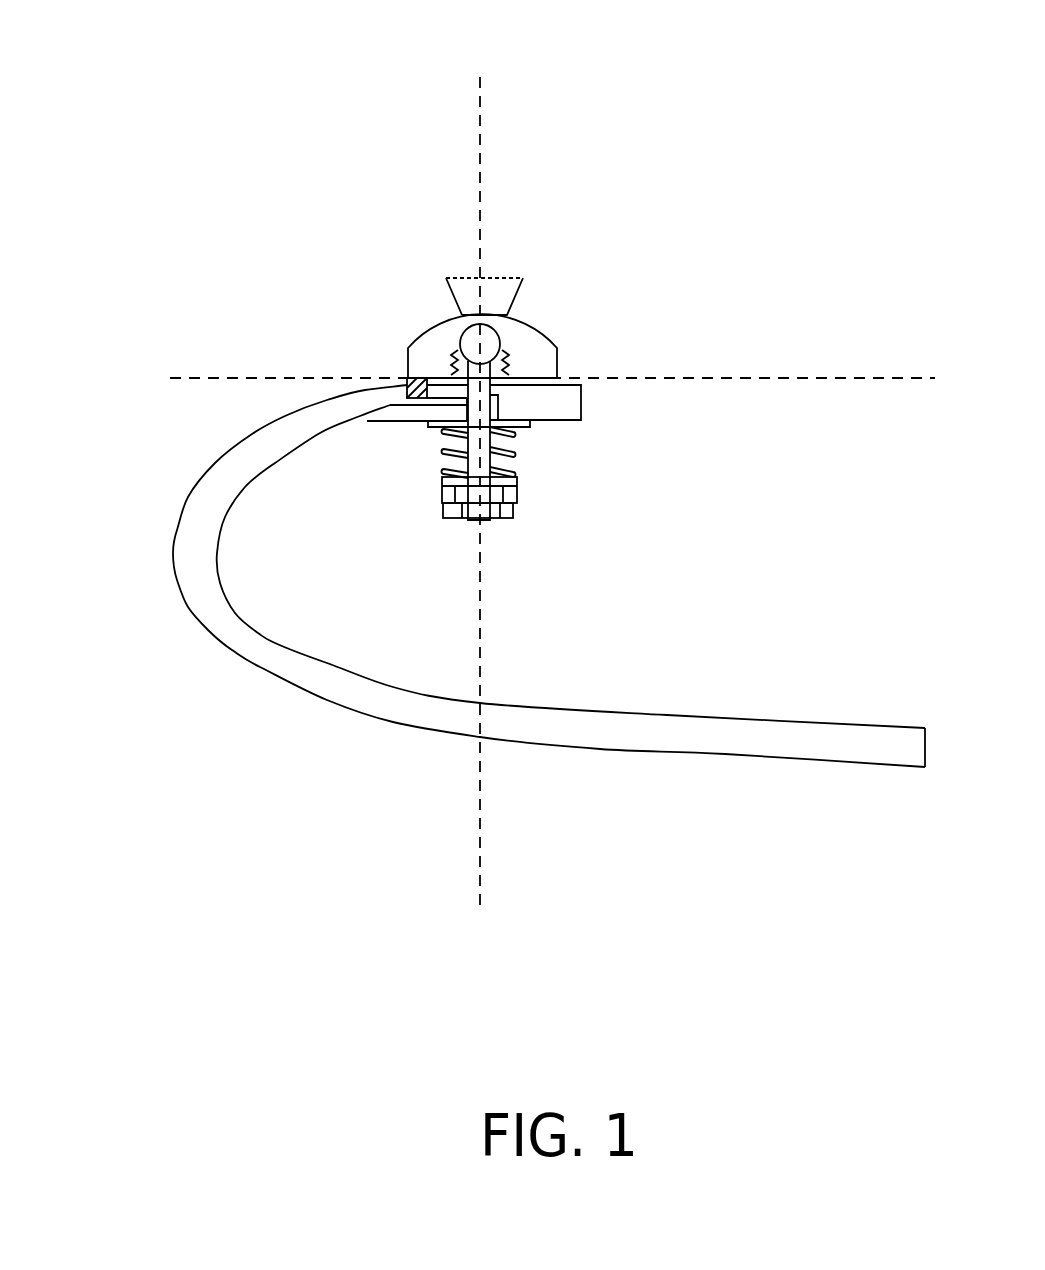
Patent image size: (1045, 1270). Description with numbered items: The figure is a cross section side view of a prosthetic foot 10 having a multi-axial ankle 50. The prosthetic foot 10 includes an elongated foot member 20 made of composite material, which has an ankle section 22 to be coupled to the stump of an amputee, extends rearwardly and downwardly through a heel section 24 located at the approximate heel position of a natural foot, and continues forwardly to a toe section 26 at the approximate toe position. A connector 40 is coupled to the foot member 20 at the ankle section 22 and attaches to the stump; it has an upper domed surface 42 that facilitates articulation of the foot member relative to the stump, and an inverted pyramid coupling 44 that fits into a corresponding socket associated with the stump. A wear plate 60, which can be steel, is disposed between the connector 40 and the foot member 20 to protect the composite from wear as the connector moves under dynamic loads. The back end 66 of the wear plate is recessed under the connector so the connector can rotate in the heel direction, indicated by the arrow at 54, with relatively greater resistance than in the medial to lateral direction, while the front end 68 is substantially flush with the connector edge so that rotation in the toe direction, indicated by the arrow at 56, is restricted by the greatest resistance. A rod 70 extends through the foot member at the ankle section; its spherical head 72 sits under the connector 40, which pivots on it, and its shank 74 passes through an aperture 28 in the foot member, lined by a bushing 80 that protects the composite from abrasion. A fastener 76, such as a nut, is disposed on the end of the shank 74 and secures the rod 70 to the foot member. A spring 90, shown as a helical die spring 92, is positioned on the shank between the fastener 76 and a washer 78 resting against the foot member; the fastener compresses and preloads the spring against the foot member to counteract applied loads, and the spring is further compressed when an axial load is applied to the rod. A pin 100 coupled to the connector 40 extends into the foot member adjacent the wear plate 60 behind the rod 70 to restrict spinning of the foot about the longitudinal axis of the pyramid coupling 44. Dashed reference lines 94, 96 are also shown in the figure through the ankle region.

The prosthetic foot 10 is at (307, 128).
The elongated foot member 20 is at (472, 627).
The ankle section 22 is at (582, 397).
The heel section 24 is at (190, 512).
The toe section 26 is at (725, 754).
The aperture 28 is at (367, 421).
The connector 40 is at (476, 349).
The upper domed surface 42 is at (530, 323).
The inverted pyramid coupling 44 is at (493, 283).
The ankle 50 is at (572, 359).
The heel direction arrow 54 is at (509, 294).
The toe direction arrow 56 is at (538, 300).
The wear plate 60 is at (523, 385).
The back end of the wear plate 66 is at (445, 382).
The front end of the wear plate 68 is at (558, 383).
The rod 70 is at (498, 392).
The spherical head 72 is at (498, 357).
The shank 74 is at (505, 515).
The fastener 76 is at (453, 513).
The washer 78 is at (515, 435).
The bushing 80 is at (530, 420).
The spring 90 is at (515, 455).
The helical die spring 92 is at (443, 432).
The vertical axis 94 is at (480, 140).
The horizontal axis 96 is at (810, 378).
The pin 100 is at (407, 382).